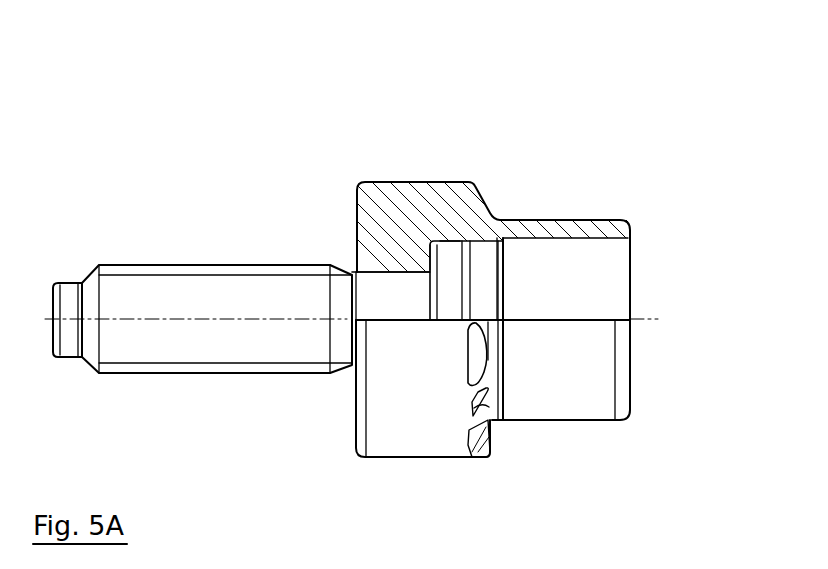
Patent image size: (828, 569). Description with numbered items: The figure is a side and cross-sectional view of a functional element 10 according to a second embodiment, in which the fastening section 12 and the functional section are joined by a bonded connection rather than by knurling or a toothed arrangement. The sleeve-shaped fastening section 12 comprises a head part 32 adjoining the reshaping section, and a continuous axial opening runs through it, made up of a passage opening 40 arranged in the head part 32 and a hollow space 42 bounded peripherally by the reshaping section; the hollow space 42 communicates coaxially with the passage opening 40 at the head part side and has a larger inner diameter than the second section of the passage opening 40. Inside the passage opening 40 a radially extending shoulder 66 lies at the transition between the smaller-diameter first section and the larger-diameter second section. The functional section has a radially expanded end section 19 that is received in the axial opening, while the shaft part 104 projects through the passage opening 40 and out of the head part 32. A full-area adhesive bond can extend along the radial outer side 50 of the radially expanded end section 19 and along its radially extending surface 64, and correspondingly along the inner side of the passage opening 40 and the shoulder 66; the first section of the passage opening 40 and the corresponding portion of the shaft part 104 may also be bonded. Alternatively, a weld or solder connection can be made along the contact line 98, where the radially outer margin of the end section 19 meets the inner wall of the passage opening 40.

The functional element 10 is at (596, 76).
The fastening section 12 is at (506, 465).
The radially expanded end section 19 is at (495, 241).
The head part 32 is at (403, 458).
The passage opening 40 is at (488, 287).
The hollow space 42 is at (602, 309).
The radial outer side 50 is at (440, 256).
The radially extending surface 64 is at (430, 258).
The shoulder 66 is at (433, 268).
The contact line 98 is at (468, 272).
The shaft part 104 is at (393, 270).